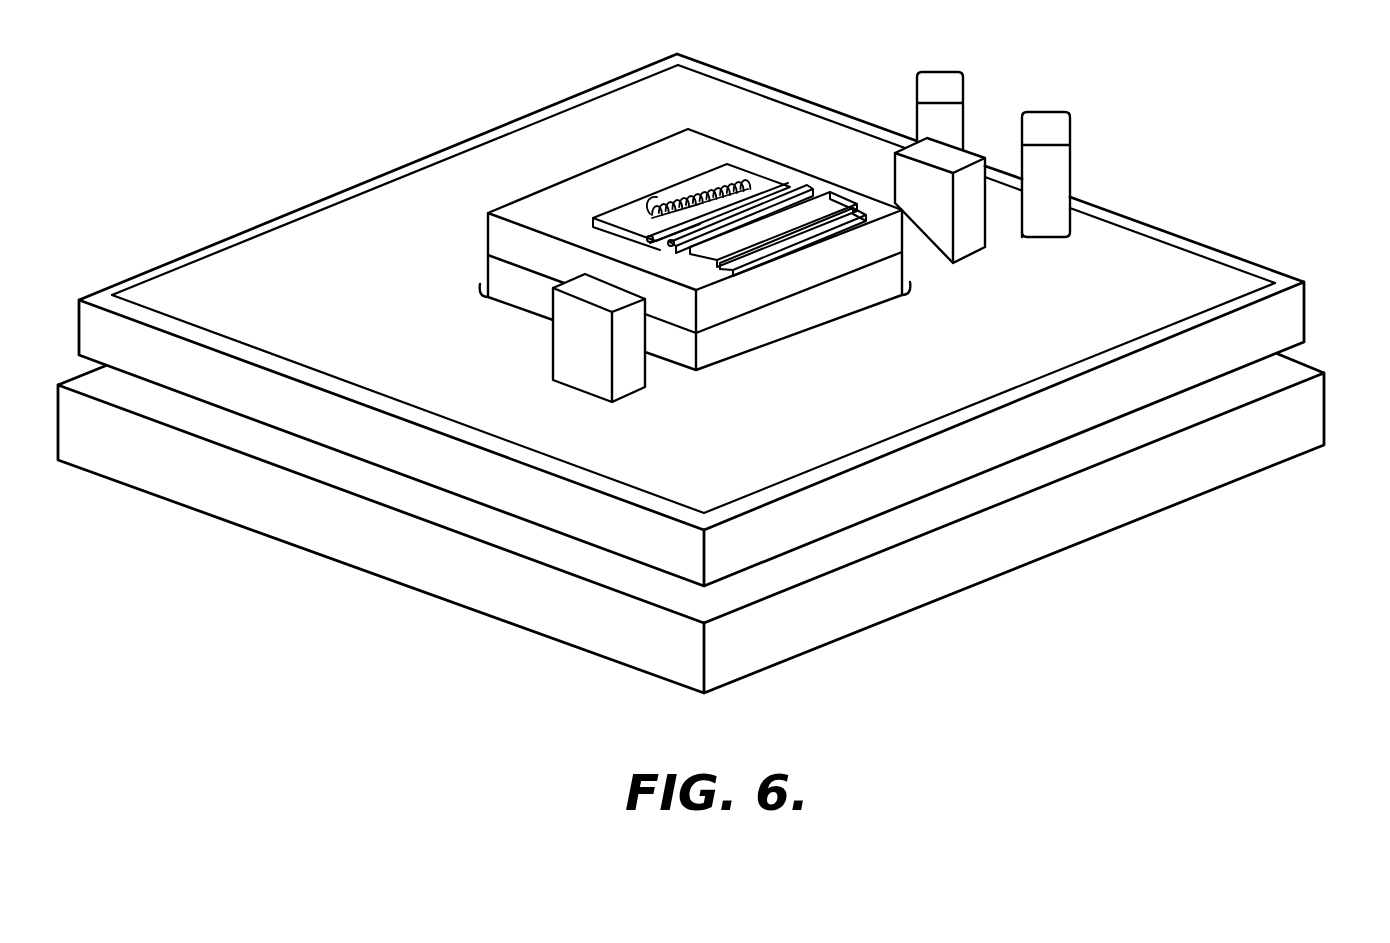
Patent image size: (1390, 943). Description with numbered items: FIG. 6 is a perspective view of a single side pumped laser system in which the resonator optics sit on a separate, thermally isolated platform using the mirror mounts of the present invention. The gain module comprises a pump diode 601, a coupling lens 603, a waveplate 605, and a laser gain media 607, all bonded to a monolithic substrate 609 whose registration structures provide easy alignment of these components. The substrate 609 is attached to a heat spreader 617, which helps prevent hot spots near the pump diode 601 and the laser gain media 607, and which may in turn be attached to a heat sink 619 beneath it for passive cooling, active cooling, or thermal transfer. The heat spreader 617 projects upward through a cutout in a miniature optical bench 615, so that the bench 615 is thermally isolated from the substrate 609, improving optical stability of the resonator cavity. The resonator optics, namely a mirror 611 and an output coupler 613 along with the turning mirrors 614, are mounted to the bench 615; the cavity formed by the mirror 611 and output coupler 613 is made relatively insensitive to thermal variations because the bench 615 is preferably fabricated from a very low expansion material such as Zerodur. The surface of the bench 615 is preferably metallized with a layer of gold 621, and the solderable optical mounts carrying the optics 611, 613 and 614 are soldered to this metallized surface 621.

The pump diode 601 is at (623, 210).
The coupling lens 603 is at (790, 177).
The waveplate 605 is at (657, 248).
The laser gain media 607 is at (820, 202).
The monolithic substrate 609 is at (737, 263).
The mirror 611 is at (570, 358).
The output coupler 613 is at (968, 243).
The turning mirrors 614 is at (947, 85).
The miniature optical bench 615 is at (1285, 318).
The heat spreader 617 is at (500, 237).
The heat sink 619 is at (873, 603).
The layer of gold 621 is at (1188, 270).